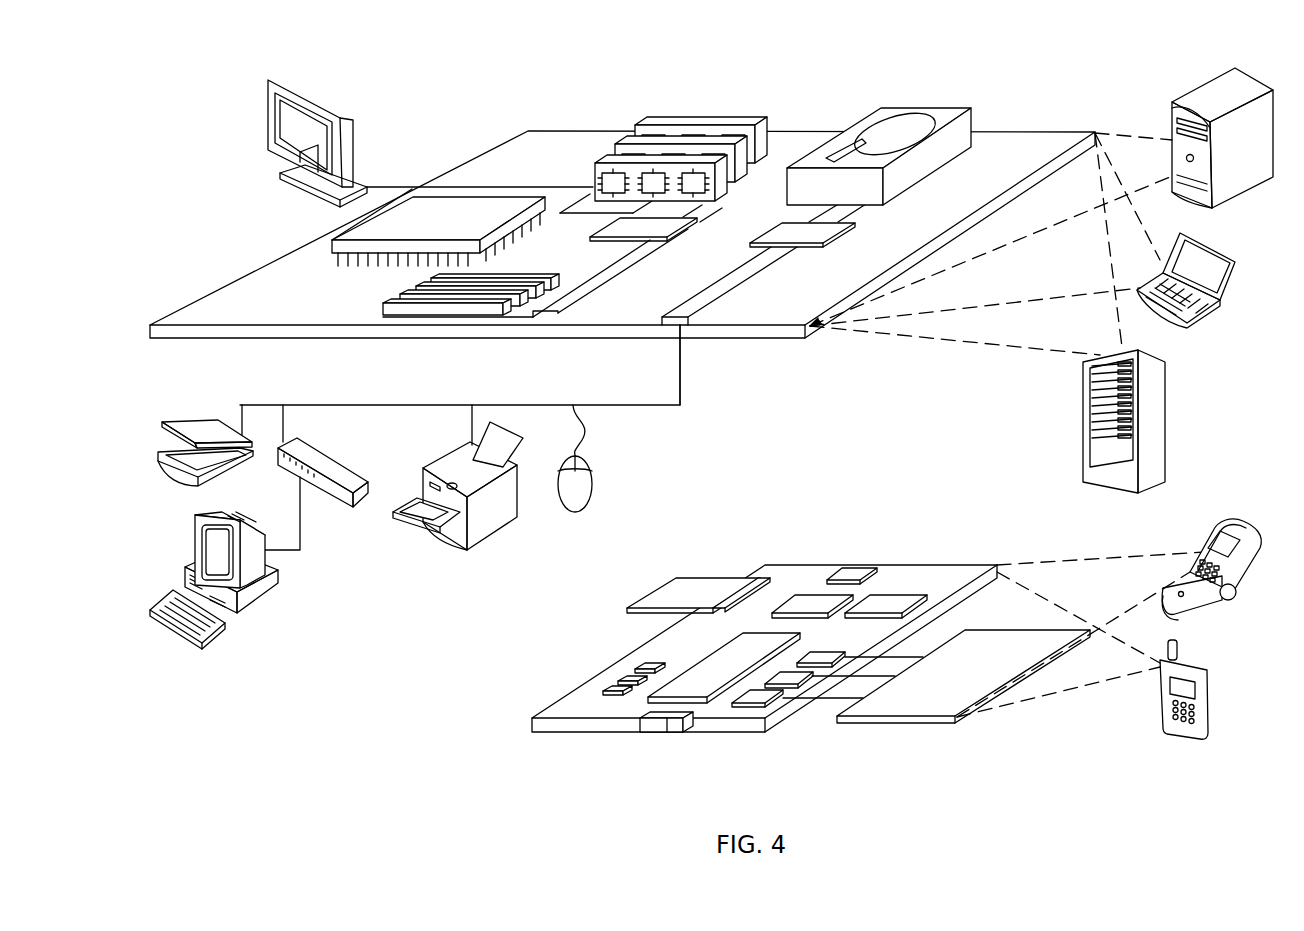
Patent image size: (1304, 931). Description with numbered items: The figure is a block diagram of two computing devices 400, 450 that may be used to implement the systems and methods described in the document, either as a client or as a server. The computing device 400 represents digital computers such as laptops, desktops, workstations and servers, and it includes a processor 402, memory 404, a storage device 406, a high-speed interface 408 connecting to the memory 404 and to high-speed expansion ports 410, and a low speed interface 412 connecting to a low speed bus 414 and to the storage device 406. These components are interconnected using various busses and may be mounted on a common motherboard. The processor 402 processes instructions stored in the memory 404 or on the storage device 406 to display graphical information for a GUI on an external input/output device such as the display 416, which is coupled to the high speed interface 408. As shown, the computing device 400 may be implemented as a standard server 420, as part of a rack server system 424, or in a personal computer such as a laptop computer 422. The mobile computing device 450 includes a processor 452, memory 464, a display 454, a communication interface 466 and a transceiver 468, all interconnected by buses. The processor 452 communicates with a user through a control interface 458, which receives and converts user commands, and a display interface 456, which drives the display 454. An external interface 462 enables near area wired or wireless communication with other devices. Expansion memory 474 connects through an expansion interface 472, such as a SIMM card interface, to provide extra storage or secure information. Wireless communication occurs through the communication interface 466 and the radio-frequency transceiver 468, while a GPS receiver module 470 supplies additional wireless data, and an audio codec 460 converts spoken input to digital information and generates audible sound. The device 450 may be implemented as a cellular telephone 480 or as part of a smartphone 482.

The computing device 400 is at (455, 100).
The processor 402 is at (332, 242).
The memory 404 is at (648, 124).
The storage device 406 is at (872, 110).
The high-speed interface 408 is at (622, 226).
The high-speed expansion ports 410 is at (400, 298).
The low speed interface 412 is at (787, 230).
The low speed bus 414 is at (683, 325).
The display 416 is at (270, 82).
The standard server 420 is at (1173, 118).
The laptop computer 422 is at (1235, 258).
The rack server system 424 is at (1083, 445).
The computing device 450 is at (505, 731).
The processor 452 is at (700, 690).
The display 454 is at (923, 705).
The display interface 456 is at (765, 702).
The control interface 458 is at (800, 684).
The audio codec 460 is at (820, 663).
The external interface 462 is at (667, 733).
The memory 464 is at (605, 680).
The communication interface 466 is at (812, 598).
The transceiver 468 is at (887, 600).
The GPS receiver module 470 is at (863, 570).
The expansion interface 472 is at (727, 590).
The expansion memory 474 is at (675, 580).
The cellular telephone 480 is at (1218, 526).
The smartphone 482 is at (1162, 693).